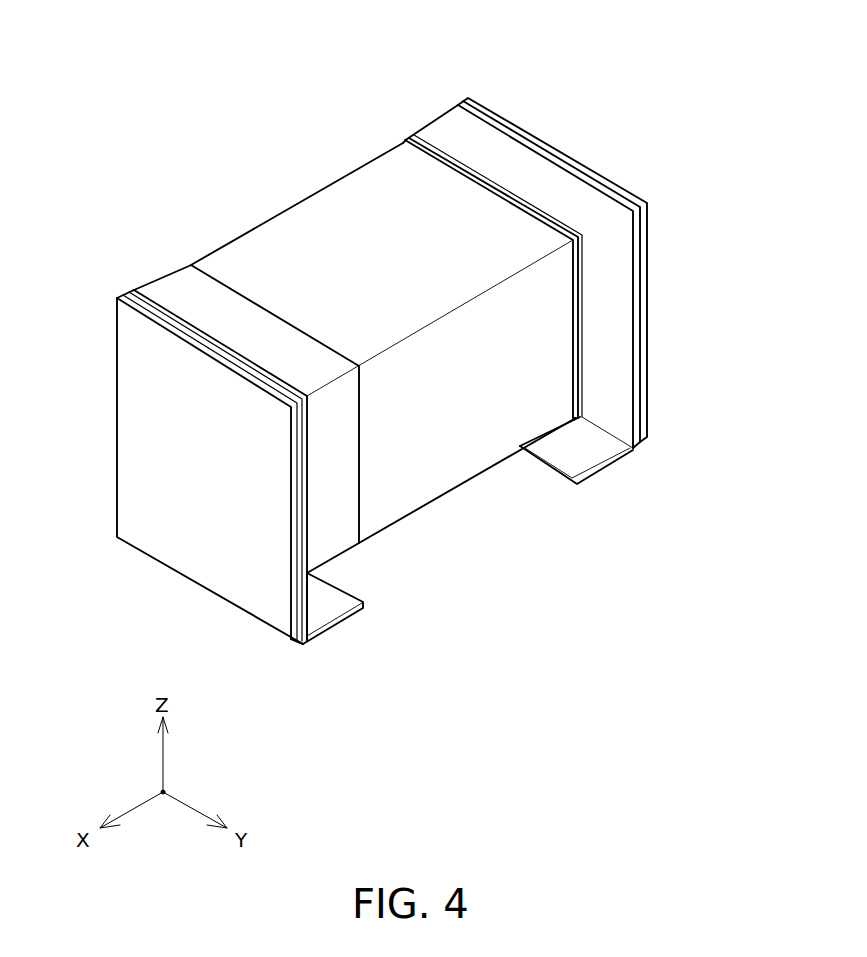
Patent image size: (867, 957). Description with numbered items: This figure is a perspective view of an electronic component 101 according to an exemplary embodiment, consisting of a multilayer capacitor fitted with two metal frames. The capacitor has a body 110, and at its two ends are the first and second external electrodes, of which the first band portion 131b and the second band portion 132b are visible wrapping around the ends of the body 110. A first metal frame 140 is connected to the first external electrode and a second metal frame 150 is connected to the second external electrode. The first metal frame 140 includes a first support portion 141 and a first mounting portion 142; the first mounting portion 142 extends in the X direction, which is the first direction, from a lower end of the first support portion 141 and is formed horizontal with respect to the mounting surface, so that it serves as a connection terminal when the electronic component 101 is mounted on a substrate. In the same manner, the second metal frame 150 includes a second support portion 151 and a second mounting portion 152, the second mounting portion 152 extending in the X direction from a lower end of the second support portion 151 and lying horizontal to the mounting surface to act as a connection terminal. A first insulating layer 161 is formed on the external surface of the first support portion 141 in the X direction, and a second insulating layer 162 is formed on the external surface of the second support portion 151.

The electronic component 101 is at (212, 62).
The body 110 is at (327, 223).
The first band portion 131b is at (333, 503).
The second band portion 132b is at (612, 322).
The first metal frame 140 is at (313, 653).
The first support portion 141 is at (267, 598).
The first mounting portion 142 is at (342, 634).
The second metal frame 150 is at (649, 439).
The second support portion 151 is at (617, 412).
The second mounting portion 152 is at (590, 446).
The first insulating layer 161 is at (168, 460).
The second insulating layer 162 is at (650, 235).